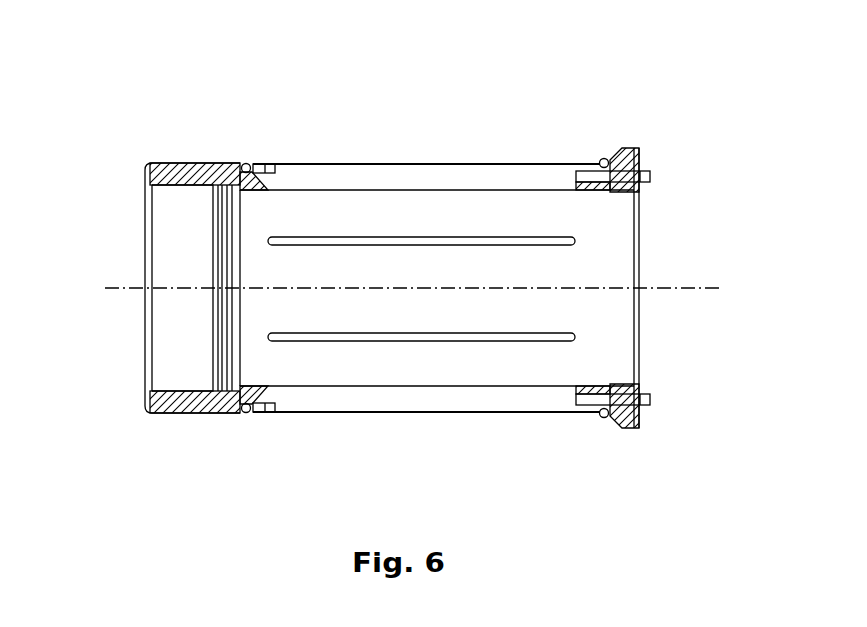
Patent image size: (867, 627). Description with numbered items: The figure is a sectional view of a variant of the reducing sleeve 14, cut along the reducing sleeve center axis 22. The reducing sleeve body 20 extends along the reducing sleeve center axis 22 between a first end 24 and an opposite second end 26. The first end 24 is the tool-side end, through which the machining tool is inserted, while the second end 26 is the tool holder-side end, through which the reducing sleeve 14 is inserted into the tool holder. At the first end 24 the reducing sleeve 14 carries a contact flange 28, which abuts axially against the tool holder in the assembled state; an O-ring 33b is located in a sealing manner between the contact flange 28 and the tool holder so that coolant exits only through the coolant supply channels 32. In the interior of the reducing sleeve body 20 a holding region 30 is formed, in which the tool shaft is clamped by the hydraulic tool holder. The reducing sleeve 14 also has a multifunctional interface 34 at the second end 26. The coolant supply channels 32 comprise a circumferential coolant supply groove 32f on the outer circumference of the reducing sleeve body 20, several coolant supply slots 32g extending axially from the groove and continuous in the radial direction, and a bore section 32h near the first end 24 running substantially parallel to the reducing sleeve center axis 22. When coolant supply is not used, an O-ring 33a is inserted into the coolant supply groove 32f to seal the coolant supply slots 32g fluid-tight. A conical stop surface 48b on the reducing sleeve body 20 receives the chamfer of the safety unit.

The reducing sleeve 14 is at (454, 160).
The reducing sleeve body 20 is at (153, 160).
The reducing sleeve center axis 22 is at (710, 290).
The first end 24 is at (652, 214).
The second end 26 is at (133, 183).
The contact flange 28 is at (622, 148).
The holding region 30 is at (602, 266).
The coolant supply channels 32 is at (362, 345).
The coolant supply groove 32f is at (256, 158).
The coolant supply slots 32g is at (362, 233).
The bore section 32h is at (652, 175).
The O-ring 33a is at (243, 163).
The O-ring 33b is at (601, 158).
The multifunctional interface 34 is at (165, 348).
The stop surface 48b is at (232, 195).